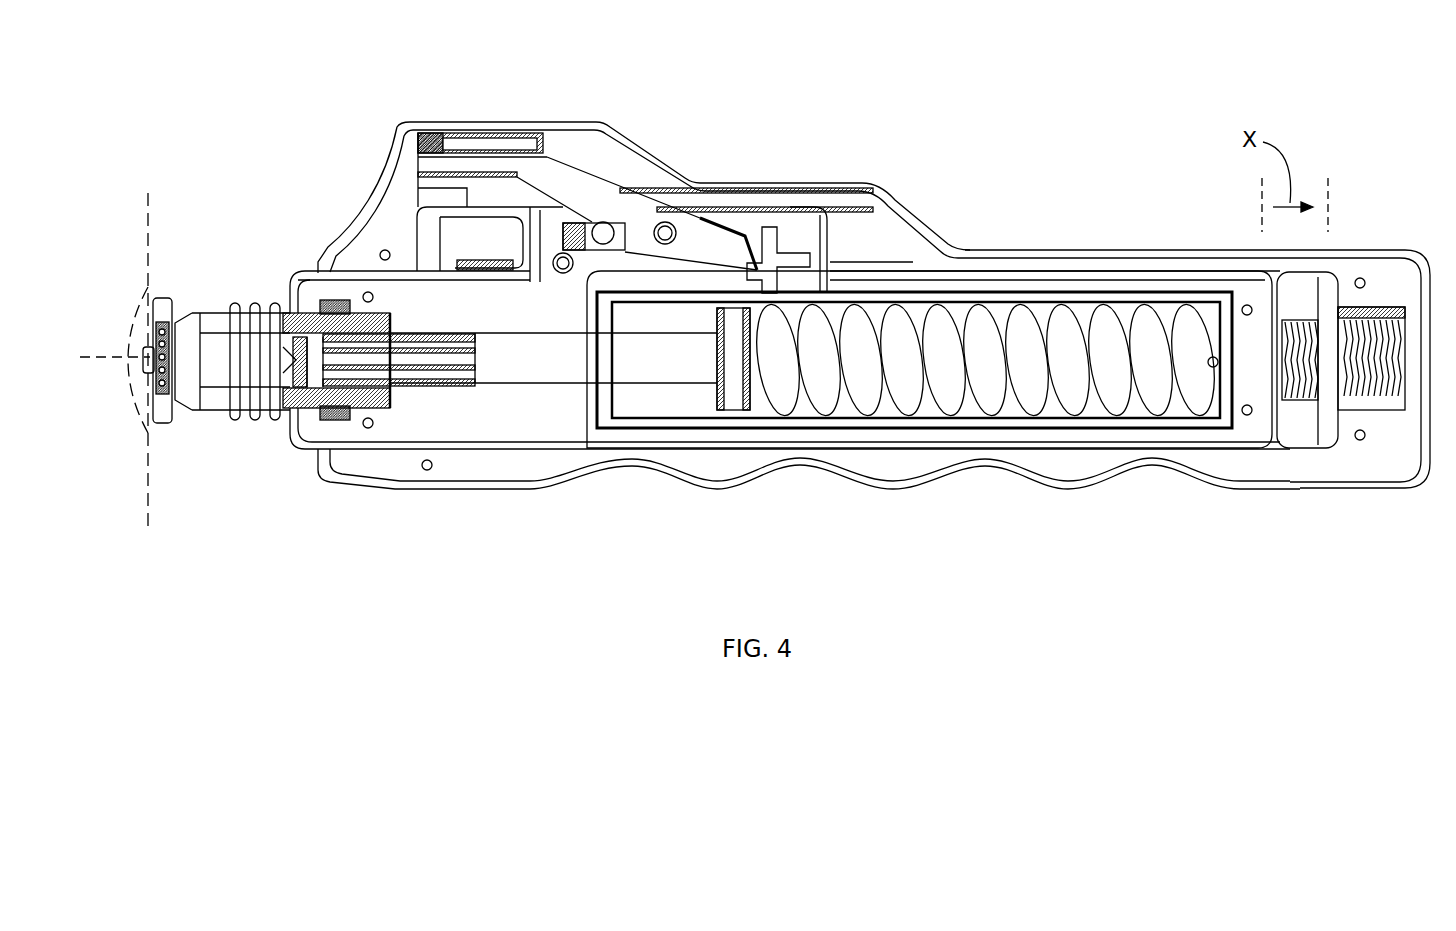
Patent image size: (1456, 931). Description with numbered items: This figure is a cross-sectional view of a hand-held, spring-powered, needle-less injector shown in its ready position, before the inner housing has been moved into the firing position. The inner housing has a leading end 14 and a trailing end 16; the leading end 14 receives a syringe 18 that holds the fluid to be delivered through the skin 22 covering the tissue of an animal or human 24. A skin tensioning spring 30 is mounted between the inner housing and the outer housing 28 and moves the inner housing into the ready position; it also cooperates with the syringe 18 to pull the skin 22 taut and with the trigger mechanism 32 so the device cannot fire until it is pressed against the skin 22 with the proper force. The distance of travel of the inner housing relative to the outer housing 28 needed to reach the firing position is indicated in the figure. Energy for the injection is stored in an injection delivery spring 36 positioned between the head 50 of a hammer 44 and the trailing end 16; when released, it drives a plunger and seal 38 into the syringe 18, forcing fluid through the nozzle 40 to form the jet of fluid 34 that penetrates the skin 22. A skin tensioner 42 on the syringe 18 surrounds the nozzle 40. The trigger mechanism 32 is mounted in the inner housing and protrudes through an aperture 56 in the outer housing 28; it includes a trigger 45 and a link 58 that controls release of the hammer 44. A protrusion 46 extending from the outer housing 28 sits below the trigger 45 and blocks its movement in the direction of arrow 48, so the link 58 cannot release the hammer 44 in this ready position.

The leading end 14 is at (293, 443).
The trailing end 16 is at (1272, 437).
The syringe 18 is at (210, 318).
The skin 22 is at (148, 245).
The animal or human 24 is at (110, 336).
The outer housing 28 is at (1088, 250).
The skin tensioning spring 30 is at (1372, 387).
The trigger mechanism 32 is at (644, 216).
The jet of fluid 34 is at (108, 376).
The injection delivery spring 36 is at (987, 403).
The plunger and seal 38 is at (415, 375).
The nozzle 40 is at (142, 362).
The skin tensioner 42 is at (160, 428).
The hammer 44 is at (553, 363).
The trigger 45 is at (508, 145).
The protrusion 46 is at (604, 222).
The arrow 48 is at (444, 100).
The head 50 is at (752, 303).
The aperture 56 is at (677, 197).
The link 58 is at (762, 263).